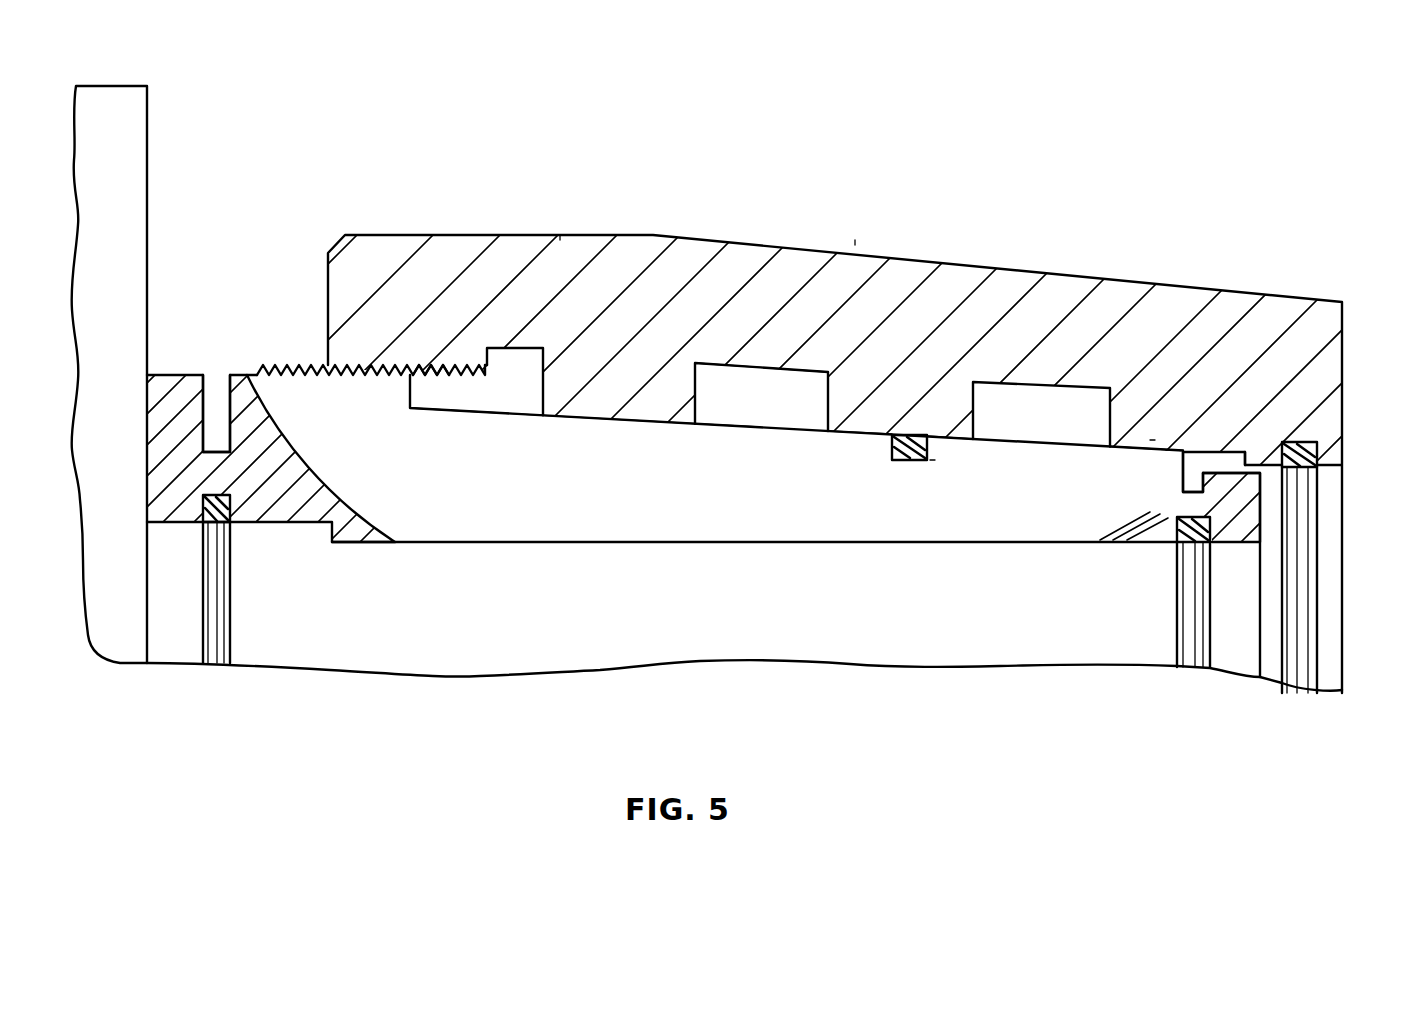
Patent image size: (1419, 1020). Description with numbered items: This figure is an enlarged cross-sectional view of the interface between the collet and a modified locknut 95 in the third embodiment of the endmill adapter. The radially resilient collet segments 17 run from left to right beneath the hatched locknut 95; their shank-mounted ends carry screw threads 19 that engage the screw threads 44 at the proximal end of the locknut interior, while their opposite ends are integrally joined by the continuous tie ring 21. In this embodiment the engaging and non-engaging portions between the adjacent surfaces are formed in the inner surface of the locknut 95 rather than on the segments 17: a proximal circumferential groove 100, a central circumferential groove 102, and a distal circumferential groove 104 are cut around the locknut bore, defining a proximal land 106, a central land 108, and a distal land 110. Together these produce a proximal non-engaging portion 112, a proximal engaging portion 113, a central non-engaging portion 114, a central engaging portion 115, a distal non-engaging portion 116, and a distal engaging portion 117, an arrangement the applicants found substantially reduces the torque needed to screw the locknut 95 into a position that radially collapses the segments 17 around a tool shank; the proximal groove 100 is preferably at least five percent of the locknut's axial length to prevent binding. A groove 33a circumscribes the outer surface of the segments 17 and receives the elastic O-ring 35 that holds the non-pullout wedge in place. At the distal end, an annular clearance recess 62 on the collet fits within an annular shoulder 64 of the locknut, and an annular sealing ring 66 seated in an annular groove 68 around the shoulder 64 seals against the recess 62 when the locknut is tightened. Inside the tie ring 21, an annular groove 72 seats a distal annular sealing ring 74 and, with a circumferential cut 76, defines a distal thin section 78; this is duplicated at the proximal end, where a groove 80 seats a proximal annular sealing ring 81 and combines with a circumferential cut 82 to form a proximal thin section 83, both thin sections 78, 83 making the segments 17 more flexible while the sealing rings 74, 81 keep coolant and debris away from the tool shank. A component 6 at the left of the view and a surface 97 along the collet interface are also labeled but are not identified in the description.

The wall 6 is at (128, 97).
The collet segments 17 is at (768, 534).
The screw threads 19 is at (300, 375).
The tie ring 21 is at (1150, 513).
The groove 33a is at (937, 458).
The O-ring 35 is at (907, 462).
The screw threads 44 is at (444, 372).
The annular clearance recess 62 is at (1225, 465).
The annular shoulder 64 is at (1288, 505).
The annular sealing ring 66 is at (1296, 445).
The annular groove 68 is at (1300, 490).
The annular groove 72 is at (1210, 557).
The distal annular sealing ring 74 is at (1200, 592).
The circumferential cut 76 is at (1200, 472).
The distal thin section 78 is at (1175, 530).
The groove 80 is at (232, 530).
The proximal annular sealing ring 81 is at (217, 630).
The circumferential cut 82 is at (210, 372).
The proximal thin section 83 is at (222, 470).
The modified locknut 95 is at (796, 242).
The bore surface 97 is at (728, 441).
The proximal circumferential groove 100 is at (537, 346).
The central circumferential groove 102 is at (820, 368).
The distal circumferential groove 104 is at (1096, 388).
The proximal land 106 is at (612, 412).
The central land 108 is at (862, 468).
The distal land 110 is at (1155, 440).
The proximal non-engaging portion 112 is at (480, 392).
The proximal engaging portion 113 is at (600, 425).
The central non-engaging portion 114 is at (762, 405).
The central engaging portion 115 is at (855, 432).
The distal non-engaging portion 116 is at (1022, 425).
The distal engaging portion 117 is at (1145, 452).